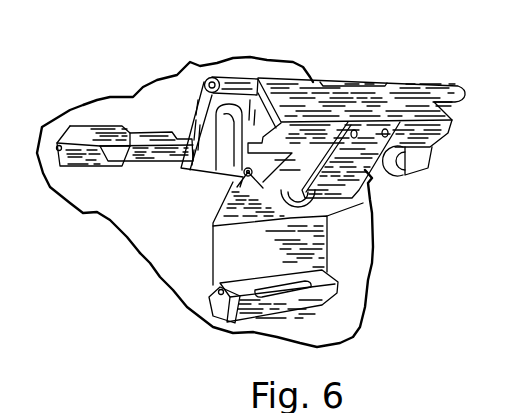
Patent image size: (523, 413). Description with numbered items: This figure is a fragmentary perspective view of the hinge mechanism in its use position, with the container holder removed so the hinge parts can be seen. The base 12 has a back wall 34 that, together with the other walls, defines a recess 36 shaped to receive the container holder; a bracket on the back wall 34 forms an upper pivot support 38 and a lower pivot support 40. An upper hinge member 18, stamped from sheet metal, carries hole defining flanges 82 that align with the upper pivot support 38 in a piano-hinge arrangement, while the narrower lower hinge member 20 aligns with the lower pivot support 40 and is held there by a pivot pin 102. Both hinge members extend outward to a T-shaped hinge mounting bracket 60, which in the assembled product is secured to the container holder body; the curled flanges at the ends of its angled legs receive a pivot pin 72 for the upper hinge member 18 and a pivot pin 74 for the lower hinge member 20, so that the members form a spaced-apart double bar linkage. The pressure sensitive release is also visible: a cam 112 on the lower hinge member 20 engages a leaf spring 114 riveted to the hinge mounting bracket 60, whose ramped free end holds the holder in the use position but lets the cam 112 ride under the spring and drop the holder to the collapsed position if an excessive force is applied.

The base 12 is at (28, 410).
The upper hinge member 18 is at (147, 181).
The lower hinge member 20 is at (328, 249).
The back wall 34 is at (170, 222).
The recess 36 is at (182, 258).
The upper pivot support 38 is at (88, 128).
The lower pivot support 40 is at (305, 310).
The hinge mounting bracket 60 is at (393, 106).
The pivot pin 72 is at (207, 74).
The pivot pin 74 is at (237, 187).
The hole defining flanges 82 is at (59, 146).
The pivot pin 102 is at (210, 306).
The cam 112 is at (293, 207).
The leaf spring 114 is at (372, 178).